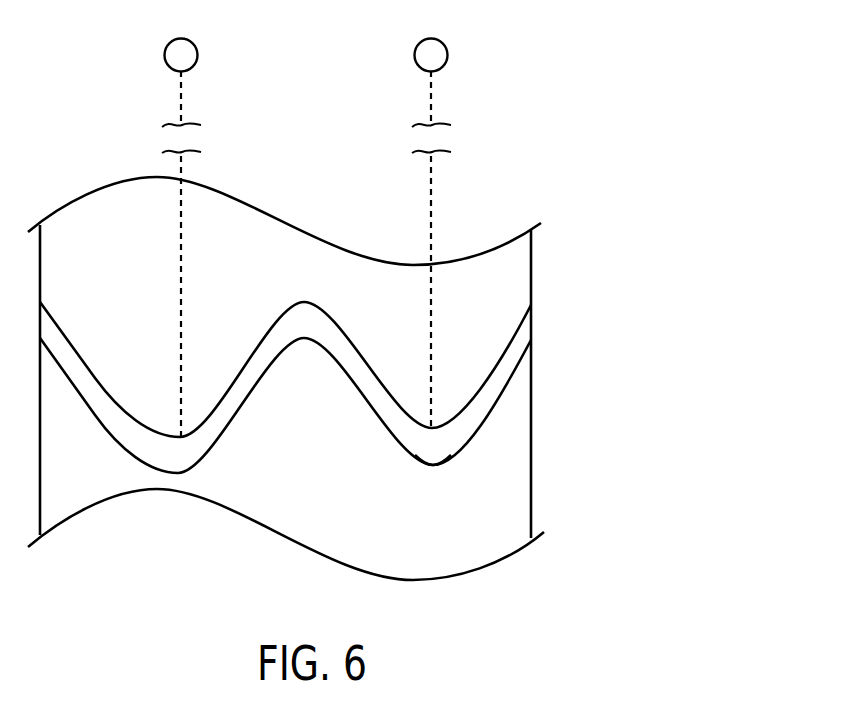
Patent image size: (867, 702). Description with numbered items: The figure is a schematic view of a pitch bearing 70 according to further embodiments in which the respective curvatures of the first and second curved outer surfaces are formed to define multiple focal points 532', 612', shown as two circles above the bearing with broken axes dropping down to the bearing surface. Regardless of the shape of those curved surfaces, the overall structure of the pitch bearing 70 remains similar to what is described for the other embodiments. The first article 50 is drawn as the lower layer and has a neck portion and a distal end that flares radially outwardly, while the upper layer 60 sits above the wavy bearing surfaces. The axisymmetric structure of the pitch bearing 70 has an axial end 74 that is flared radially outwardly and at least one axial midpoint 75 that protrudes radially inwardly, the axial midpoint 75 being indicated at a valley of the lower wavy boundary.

The first article 50 is at (524, 453).
The top layer 60 is at (517, 262).
The pitch bearing 70 is at (503, 380).
The axial end 74 is at (532, 317).
The axial midpoint 75 is at (433, 465).
The focal point 532' is at (367, 238).
The focal point 612' is at (367, 238).